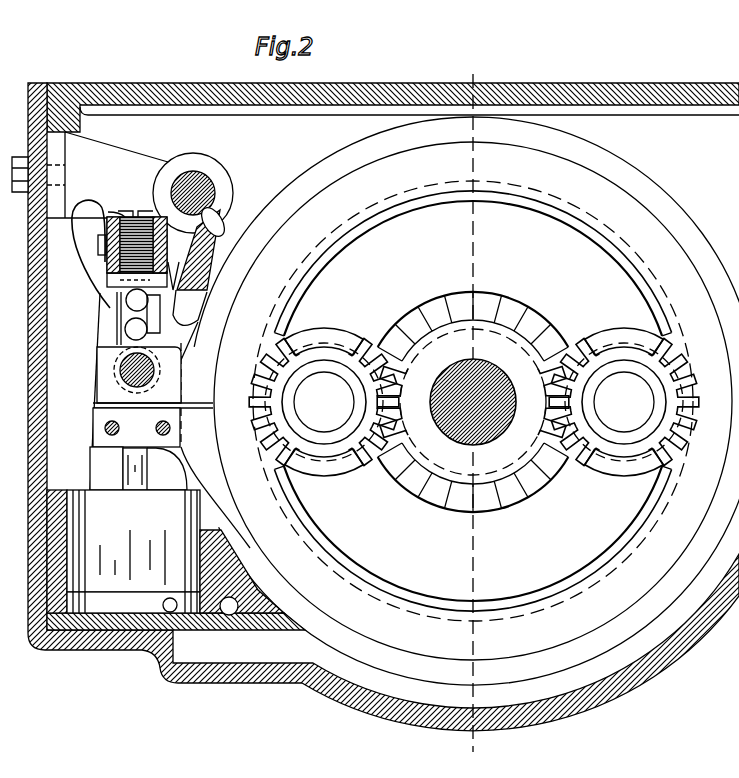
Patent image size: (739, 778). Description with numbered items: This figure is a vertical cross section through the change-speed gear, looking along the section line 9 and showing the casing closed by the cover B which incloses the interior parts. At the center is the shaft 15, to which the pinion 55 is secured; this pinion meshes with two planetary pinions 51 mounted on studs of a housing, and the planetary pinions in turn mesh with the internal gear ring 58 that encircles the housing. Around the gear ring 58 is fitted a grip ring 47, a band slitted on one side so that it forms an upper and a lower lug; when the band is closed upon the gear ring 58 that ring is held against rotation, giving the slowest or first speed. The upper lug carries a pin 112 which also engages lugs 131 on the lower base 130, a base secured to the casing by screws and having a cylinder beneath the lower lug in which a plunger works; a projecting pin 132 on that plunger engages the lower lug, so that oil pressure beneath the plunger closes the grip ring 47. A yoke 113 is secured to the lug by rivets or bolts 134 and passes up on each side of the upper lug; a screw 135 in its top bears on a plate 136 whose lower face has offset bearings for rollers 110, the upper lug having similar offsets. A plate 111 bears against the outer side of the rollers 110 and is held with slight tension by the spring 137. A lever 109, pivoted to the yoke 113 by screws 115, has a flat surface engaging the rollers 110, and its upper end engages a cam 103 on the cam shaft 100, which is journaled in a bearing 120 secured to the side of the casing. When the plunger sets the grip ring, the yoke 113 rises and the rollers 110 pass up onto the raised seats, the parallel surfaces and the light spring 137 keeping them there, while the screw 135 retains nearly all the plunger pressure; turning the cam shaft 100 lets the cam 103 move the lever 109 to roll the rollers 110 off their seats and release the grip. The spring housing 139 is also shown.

The cover B is at (552, 84).
The section line 9 is at (486, 761).
The shaft 15 is at (512, 447).
The grip ring 47 is at (426, 401).
The planetary pinion 51 is at (474, 402).
The pinion 55 is at (473, 402).
The internal gear ring 58 is at (466, 401).
The cam shaft 100 is at (214, 189).
The cam 103 is at (178, 165).
The lever 109 is at (198, 282).
The rollers 110 is at (122, 332).
The plate 111 is at (122, 337).
The pin 112 is at (148, 384).
The yoke 113 is at (100, 387).
The screws 115 is at (153, 214).
The bearing 120 is at (90, 175).
The lower base 130 is at (232, 565).
The lugs 131 is at (100, 470).
The projecting pin 132 is at (157, 475).
The rivets or bolts 134 is at (119, 430).
The screw 135 is at (125, 215).
The plate 136 is at (110, 280).
The spring 137 is at (84, 261).
The spring housing 139 is at (133, 551).